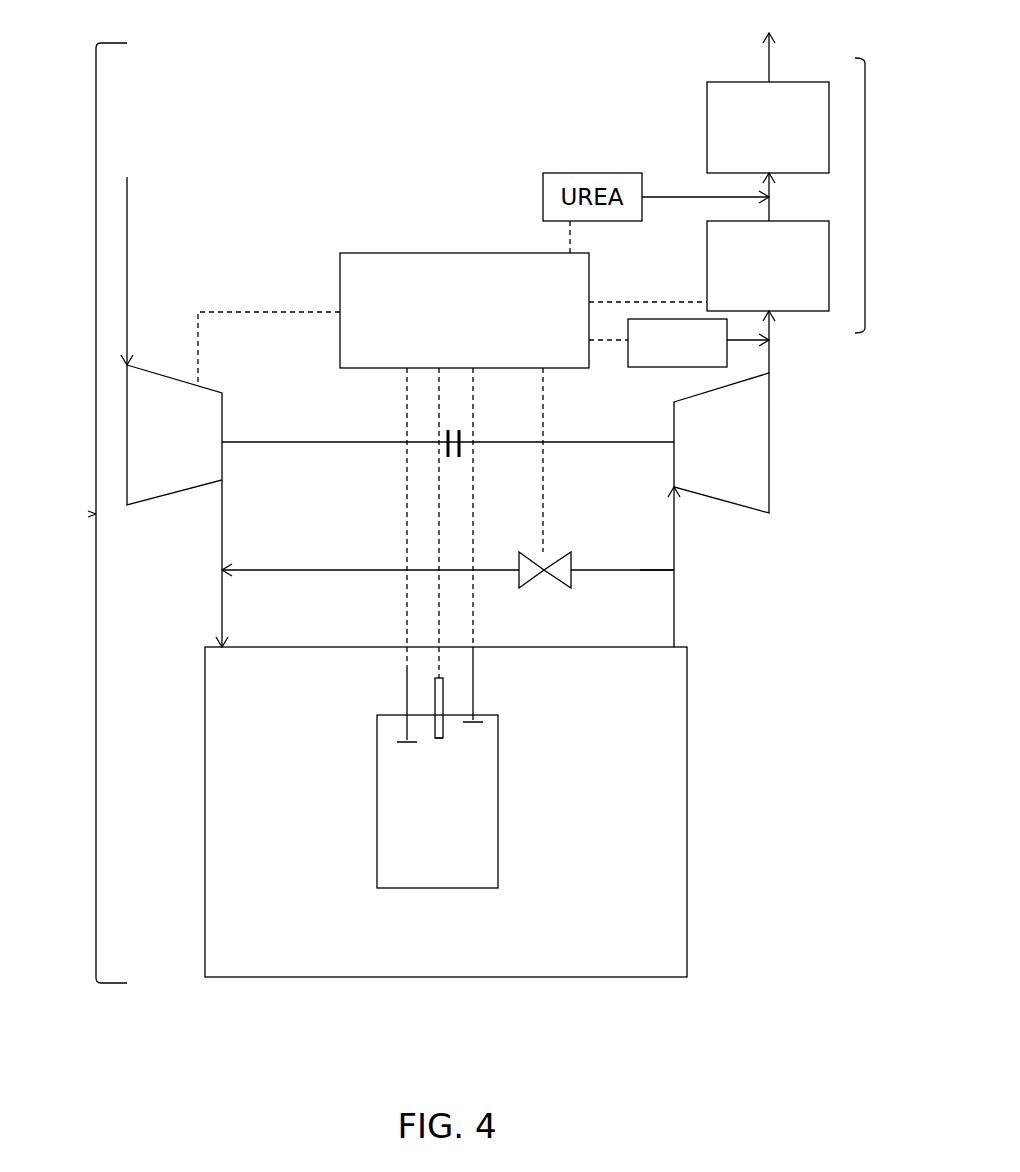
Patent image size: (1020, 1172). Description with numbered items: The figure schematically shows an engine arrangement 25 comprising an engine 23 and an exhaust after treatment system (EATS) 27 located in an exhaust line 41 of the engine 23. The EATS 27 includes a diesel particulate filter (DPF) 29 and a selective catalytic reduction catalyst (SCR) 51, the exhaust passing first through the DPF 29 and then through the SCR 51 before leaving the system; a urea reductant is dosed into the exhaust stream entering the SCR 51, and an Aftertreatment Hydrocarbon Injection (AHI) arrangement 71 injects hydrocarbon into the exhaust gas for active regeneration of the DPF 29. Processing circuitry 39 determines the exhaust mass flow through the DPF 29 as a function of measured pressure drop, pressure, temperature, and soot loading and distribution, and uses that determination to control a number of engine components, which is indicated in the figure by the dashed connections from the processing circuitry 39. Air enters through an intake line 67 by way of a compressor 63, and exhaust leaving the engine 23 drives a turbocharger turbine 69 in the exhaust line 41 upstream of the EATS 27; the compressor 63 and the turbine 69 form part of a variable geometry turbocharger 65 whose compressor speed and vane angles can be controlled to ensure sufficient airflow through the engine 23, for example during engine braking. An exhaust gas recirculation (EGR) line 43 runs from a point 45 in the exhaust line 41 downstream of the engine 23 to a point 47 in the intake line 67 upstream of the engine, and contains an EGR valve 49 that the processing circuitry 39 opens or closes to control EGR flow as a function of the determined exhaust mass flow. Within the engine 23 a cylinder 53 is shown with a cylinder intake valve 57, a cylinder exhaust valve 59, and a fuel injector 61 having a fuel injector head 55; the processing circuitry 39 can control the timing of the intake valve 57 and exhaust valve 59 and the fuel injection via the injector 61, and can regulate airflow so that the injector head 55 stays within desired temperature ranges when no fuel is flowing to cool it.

The engine 23 is at (200, 896).
The engine arrangement 25 is at (96, 514).
The exhaust after treatment system (EATS) 27 is at (865, 197).
The diesel particulate filter (DPF) 29 is at (707, 262).
The processing circuitry 39 is at (370, 253).
The exhaust line 41 is at (674, 614).
The exhaust gas recirculation (EGR) line 43 is at (352, 568).
The point in the exhaust line 45 is at (672, 566).
The point in the intake line 47 is at (224, 566).
The EGR valve 49 is at (548, 565).
The selective catalytic reduction catalyst (SCR) 51 is at (707, 132).
The engine cylinder 53 is at (502, 862).
The fuel injector head 55 is at (445, 740).
The cylinder intake valve 57 is at (397, 730).
The cylinder exhaust valve 59 is at (475, 702).
The fuel injector 61 is at (444, 726).
The compressor 63 is at (175, 495).
The variable geometry turbocharger 65 is at (309, 440).
The intake line 67 is at (222, 598).
The turbocharger turbine 69 is at (769, 480).
The Aftertreatment Hydrocarbon Injection (AHI) arrangement 71 is at (650, 367).